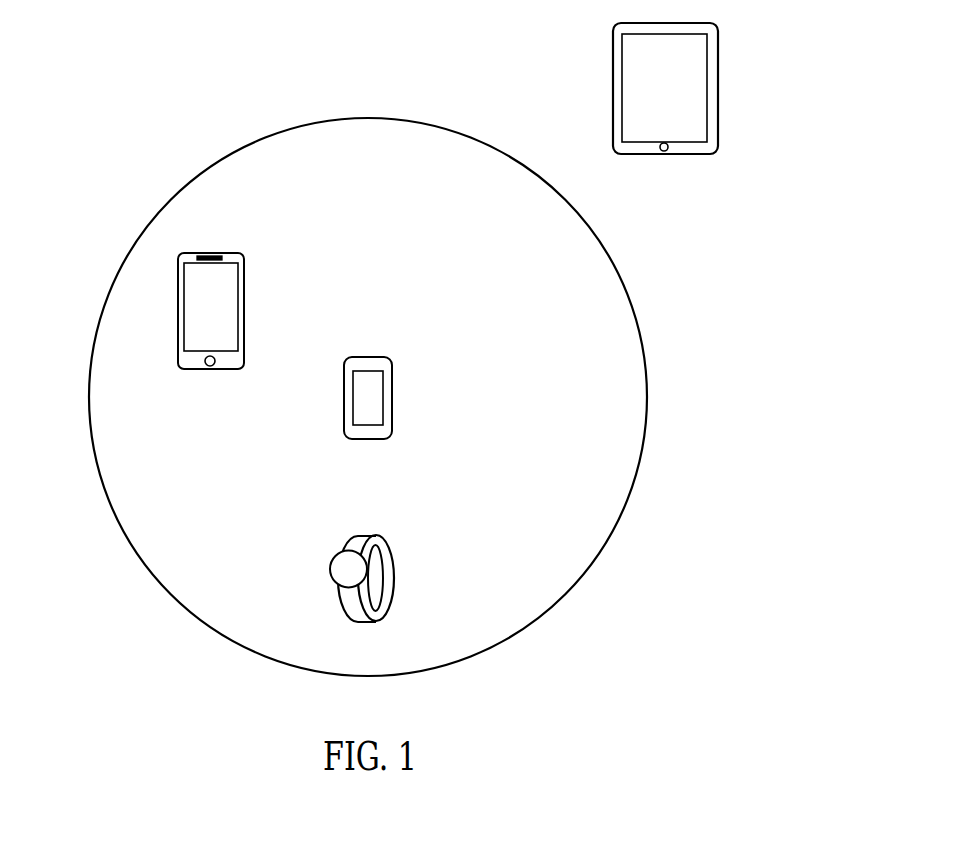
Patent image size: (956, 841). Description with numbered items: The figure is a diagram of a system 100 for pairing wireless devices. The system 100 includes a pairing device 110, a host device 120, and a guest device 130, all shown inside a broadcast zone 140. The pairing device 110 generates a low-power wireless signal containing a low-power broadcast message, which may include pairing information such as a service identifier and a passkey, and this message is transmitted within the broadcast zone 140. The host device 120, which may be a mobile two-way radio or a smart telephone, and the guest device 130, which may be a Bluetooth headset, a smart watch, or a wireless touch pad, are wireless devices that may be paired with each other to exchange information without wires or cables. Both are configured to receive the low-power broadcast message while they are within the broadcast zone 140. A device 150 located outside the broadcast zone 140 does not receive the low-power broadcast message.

The system 100 is at (202, 105).
The pairing device 110 is at (344, 398).
The host device 120 is at (178, 312).
The guest device 130 is at (330, 566).
The broadcast zone 140 is at (89, 400).
The device 150 is at (614, 87).